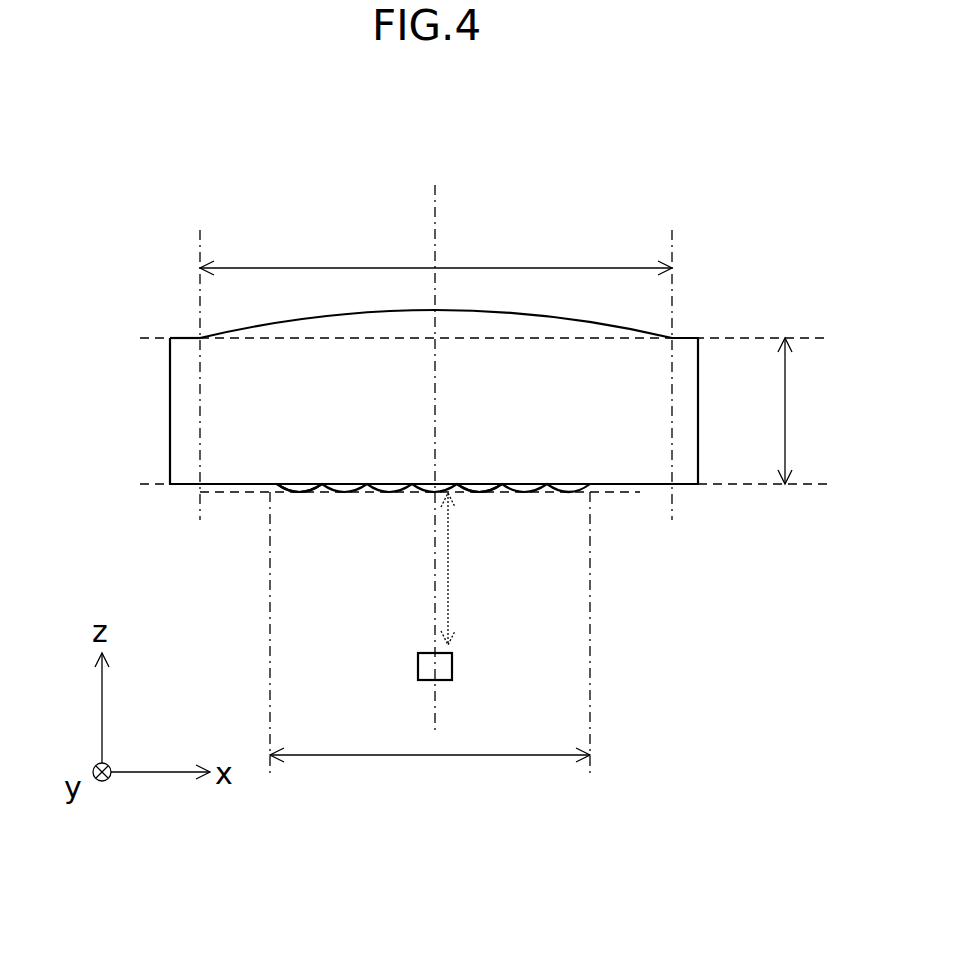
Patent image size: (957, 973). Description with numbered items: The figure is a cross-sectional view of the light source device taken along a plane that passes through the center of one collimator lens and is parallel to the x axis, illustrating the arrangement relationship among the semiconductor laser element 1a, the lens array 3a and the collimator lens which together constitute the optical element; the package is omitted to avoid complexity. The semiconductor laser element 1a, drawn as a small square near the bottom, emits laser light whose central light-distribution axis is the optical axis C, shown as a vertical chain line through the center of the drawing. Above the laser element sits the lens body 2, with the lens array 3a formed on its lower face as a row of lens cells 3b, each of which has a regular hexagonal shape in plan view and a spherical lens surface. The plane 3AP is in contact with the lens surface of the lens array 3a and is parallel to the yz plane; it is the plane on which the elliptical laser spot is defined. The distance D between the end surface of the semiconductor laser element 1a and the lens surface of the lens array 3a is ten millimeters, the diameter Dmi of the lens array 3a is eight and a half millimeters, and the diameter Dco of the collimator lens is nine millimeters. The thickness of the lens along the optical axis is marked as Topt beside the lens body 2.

The lens 2 is at (188, 420).
The lens array 3a is at (318, 493).
The lens cell 3b is at (487, 492).
The plane 3AP is at (597, 492).
The semiconductor laser element 1a is at (437, 665).
The optical axis C is at (437, 228).
The distance D is at (464, 569).
The diameter of collimator lens Dco is at (436, 252).
The diameter of lens array Dmi is at (430, 652).
The optical thickness of lens Topt is at (820, 411).